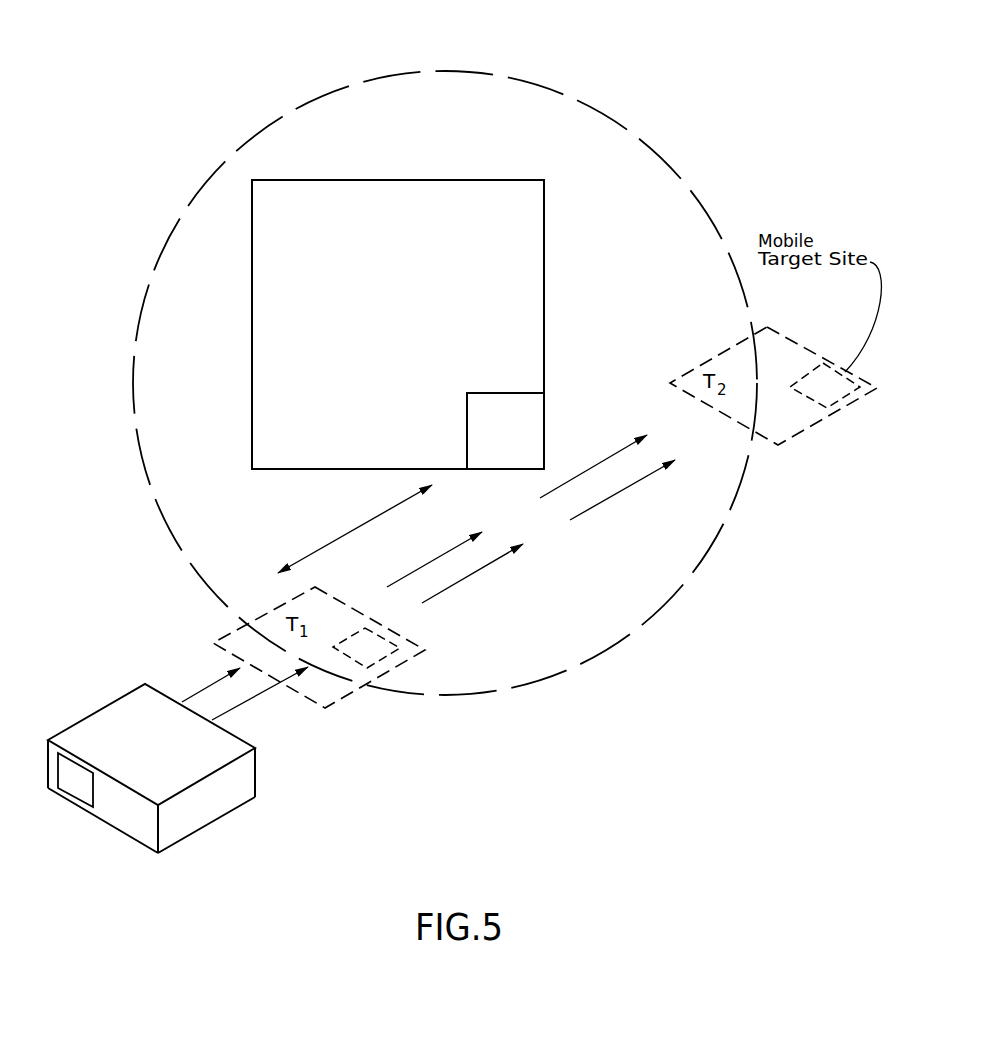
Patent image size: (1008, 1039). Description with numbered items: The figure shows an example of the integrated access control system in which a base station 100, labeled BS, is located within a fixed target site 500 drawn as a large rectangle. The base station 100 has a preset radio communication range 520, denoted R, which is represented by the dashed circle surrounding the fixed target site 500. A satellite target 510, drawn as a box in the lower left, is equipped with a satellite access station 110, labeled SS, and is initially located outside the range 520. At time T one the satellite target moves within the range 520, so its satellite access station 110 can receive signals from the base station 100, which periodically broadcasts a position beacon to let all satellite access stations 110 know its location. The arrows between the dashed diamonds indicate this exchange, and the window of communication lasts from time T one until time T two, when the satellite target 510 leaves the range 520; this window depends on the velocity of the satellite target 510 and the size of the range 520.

The radio preset communication range 520 is at (315, 100).
The fixed target site 500 is at (310, 180).
The base station 100 is at (545, 410).
The satellite access station 110 is at (383, 662).
The satellite target 510 is at (178, 793).